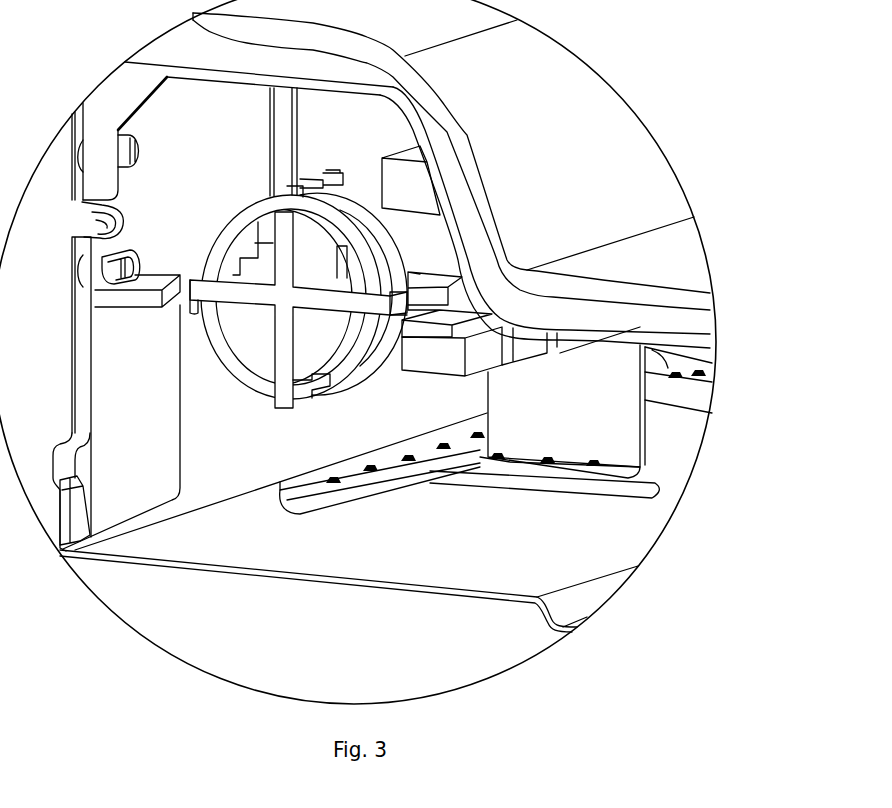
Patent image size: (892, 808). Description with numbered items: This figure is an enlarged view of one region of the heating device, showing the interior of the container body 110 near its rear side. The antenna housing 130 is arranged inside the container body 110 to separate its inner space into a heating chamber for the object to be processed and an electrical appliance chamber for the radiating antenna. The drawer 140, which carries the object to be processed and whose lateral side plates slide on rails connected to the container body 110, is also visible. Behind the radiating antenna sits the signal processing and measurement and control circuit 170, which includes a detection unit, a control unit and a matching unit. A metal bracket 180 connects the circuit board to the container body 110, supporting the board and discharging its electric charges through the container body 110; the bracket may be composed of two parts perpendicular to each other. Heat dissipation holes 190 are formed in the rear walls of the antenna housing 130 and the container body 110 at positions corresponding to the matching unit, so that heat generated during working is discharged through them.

The container body 110 is at (407, 553).
The antenna housing 130 is at (670, 317).
The drawer 140 is at (643, 173).
The signal processing and measurement and control circuit 170 is at (310, 300).
The metal bracket 180 is at (427, 468).
The heat dissipation holes 190 is at (87, 330).